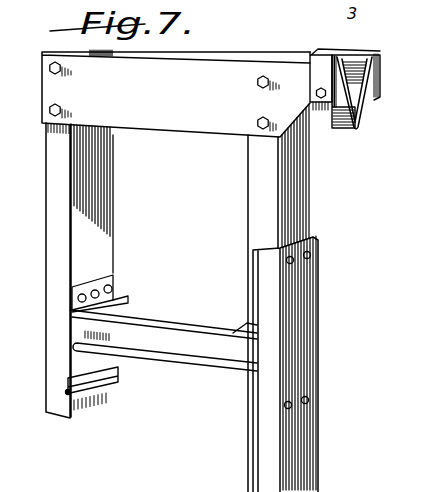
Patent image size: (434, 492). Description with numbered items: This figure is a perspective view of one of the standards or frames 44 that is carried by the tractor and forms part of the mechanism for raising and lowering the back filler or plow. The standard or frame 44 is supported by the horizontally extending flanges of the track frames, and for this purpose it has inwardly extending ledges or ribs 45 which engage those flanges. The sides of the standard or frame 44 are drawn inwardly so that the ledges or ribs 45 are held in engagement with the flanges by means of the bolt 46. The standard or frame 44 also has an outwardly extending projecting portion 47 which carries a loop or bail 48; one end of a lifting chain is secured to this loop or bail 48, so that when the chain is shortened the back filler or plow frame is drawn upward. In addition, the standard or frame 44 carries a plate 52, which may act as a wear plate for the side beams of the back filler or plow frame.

The standard or frame 44 is at (97, 220).
The ledge or rib 45 is at (118, 380).
The bolt 46 is at (193, 363).
The projecting portion 47 is at (310, 108).
The loop or bail 48 is at (362, 122).
The plate 52 is at (300, 340).